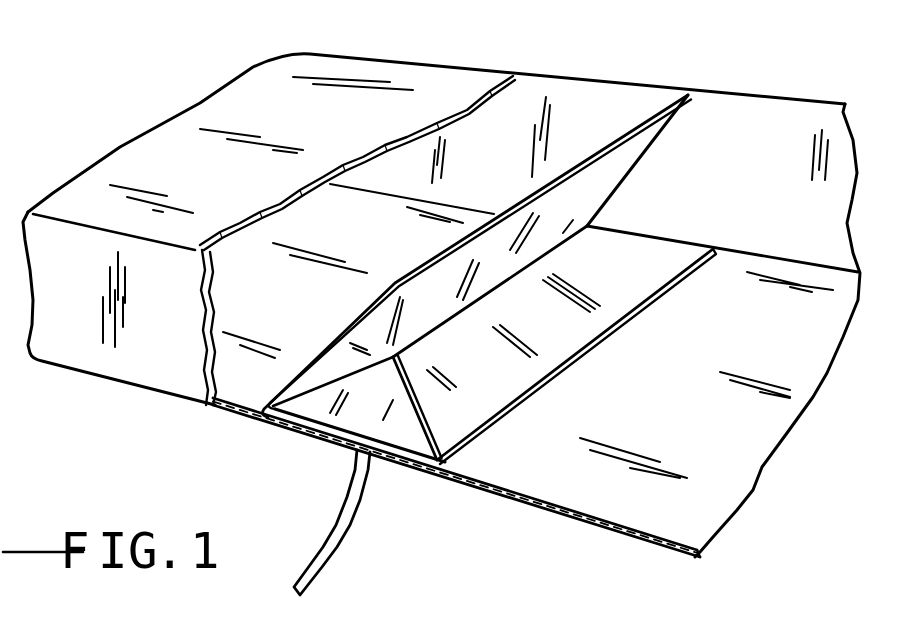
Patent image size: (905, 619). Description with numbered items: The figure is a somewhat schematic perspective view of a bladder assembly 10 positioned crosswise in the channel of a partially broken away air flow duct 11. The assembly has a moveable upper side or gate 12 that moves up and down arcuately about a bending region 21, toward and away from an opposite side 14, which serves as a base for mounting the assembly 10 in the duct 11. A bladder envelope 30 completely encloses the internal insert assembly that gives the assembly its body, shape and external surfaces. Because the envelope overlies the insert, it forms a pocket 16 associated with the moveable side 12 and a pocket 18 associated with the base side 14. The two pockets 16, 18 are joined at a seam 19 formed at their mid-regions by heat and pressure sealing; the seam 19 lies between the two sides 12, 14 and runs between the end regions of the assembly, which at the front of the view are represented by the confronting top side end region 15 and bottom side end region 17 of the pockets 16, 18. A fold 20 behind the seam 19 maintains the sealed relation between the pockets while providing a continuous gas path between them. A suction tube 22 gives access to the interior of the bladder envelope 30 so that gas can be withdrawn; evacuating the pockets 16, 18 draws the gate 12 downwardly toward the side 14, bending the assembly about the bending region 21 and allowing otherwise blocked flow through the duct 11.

The bladder assembly 10 is at (675, 155).
The duct 11 is at (447, 93).
The side 12 is at (442, 252).
The opposite side 14 is at (588, 354).
The top side end region 15 is at (367, 338).
The pocket 16 is at (590, 182).
The bottom side end region 17 is at (366, 412).
The pocket 18 is at (594, 246).
The seam 19 is at (487, 303).
The fold 20 is at (338, 418).
The bending region 21 is at (225, 412).
The suction tube 22 is at (357, 527).
The bladder envelope 30 is at (595, 297).